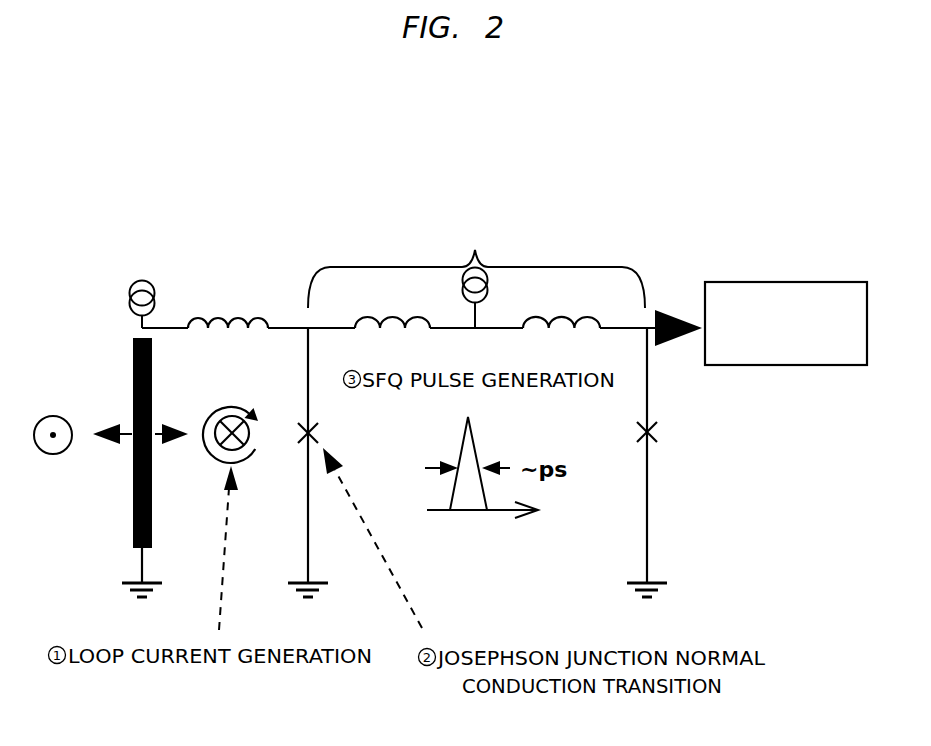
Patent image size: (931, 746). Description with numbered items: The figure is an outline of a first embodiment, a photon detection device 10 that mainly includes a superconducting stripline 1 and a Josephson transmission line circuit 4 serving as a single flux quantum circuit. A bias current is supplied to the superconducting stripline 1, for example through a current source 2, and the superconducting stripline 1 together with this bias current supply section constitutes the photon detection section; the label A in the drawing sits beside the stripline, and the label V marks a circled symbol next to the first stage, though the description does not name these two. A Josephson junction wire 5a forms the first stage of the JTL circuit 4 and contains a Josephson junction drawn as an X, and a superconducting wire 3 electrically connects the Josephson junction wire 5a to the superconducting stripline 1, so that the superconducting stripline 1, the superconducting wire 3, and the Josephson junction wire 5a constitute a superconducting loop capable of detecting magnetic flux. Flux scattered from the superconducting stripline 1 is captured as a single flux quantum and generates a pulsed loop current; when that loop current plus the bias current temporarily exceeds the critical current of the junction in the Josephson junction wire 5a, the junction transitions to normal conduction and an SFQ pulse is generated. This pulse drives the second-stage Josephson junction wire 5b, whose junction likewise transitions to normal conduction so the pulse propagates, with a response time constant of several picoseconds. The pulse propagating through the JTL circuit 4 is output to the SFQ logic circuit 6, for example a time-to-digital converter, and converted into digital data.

The superconducting stripline 1 is at (133, 365).
The current source 2 is at (142, 280).
The superconducting wire 3 is at (270, 328).
The Josephson transmission line (JTL) circuit 4 is at (476, 270).
The Josephson junction wire 5a is at (306, 520).
The Josephson junction wire 5b is at (647, 497).
The SFQ logic circuit 6 is at (777, 282).
The photon detection device 10 is at (650, 232).
The magnetic flux direction A is at (53, 455).
The loop current / flux V is at (250, 455).